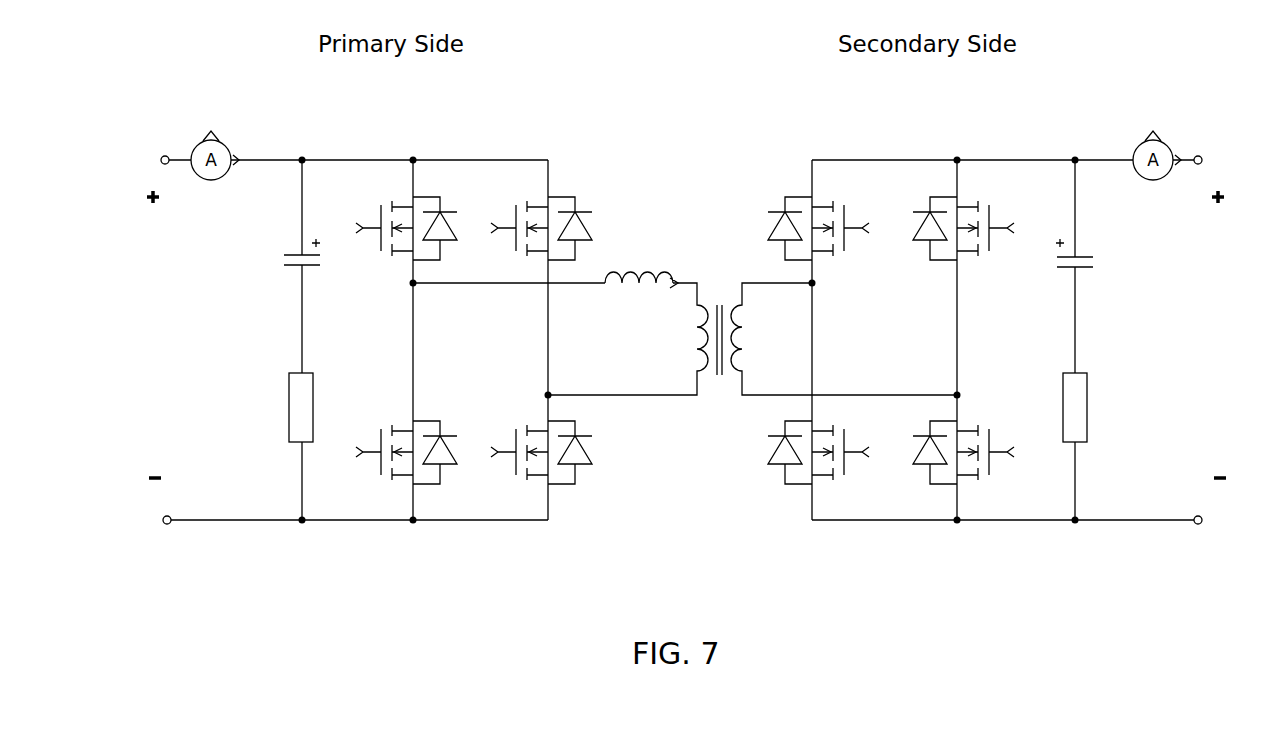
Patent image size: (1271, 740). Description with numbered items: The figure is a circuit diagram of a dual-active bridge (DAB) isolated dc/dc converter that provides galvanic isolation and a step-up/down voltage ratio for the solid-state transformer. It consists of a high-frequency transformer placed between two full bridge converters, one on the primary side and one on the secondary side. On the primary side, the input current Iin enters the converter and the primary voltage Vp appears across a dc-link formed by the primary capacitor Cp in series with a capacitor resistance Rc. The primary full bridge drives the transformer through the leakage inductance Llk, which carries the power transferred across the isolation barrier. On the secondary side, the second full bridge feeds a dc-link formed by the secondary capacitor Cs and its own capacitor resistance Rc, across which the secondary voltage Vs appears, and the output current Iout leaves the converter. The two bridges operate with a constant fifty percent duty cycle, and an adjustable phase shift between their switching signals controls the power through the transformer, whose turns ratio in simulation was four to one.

The input current Iin is at (215, 137).
The output current Iout is at (1150, 137).
The primary voltage Vp is at (154, 334).
The secondary voltage Vs is at (1210, 334).
The primary capacitor Cp is at (274, 266).
The secondary capacitor Cs is at (1097, 266).
The capacitor resistance Rc is at (690, 446).
The leakage inductance Llk is at (641, 259).